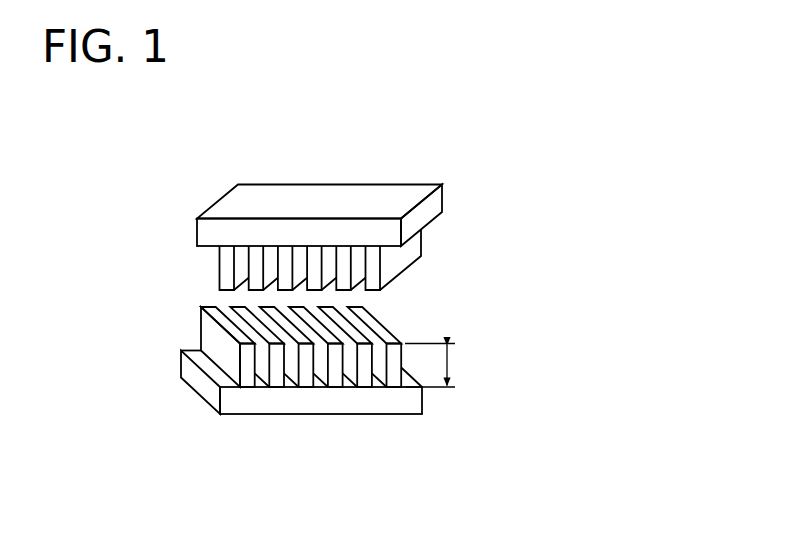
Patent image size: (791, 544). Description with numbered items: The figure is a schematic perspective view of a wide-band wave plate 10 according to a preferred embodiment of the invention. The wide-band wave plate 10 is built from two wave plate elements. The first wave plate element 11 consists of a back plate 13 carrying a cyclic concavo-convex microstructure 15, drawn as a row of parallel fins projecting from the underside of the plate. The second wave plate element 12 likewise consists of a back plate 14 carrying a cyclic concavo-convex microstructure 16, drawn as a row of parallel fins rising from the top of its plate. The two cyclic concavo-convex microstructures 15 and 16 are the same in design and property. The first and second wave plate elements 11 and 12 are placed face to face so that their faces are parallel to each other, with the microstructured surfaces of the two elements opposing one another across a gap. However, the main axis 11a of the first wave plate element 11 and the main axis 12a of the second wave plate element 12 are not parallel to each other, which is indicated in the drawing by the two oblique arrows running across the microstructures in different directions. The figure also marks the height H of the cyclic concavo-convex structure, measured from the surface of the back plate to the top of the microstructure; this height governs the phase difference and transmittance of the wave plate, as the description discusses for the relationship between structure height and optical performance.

The wide-band wave plate 10 is at (428, 307).
The first wave plate element 11 is at (352, 184).
The main axis of first wave plate element 11a is at (290, 246).
The second wave plate element 12 is at (282, 415).
The main axis of second wave plate element 12a is at (312, 358).
The back plate 13 is at (436, 203).
The back plate 14 is at (200, 386).
The cyclic concavo-convex microstructure 15 is at (413, 249).
The cyclic concavo-convex microstructure 16 is at (212, 337).